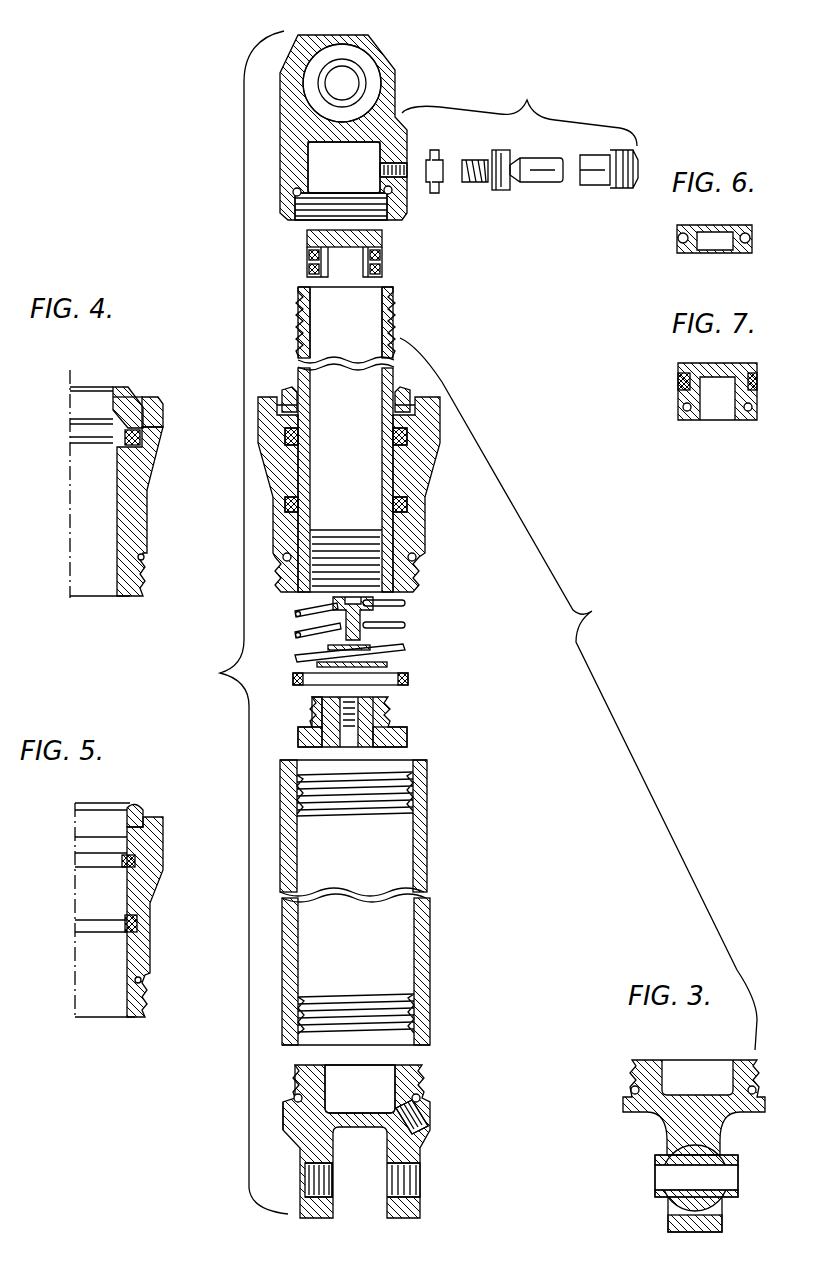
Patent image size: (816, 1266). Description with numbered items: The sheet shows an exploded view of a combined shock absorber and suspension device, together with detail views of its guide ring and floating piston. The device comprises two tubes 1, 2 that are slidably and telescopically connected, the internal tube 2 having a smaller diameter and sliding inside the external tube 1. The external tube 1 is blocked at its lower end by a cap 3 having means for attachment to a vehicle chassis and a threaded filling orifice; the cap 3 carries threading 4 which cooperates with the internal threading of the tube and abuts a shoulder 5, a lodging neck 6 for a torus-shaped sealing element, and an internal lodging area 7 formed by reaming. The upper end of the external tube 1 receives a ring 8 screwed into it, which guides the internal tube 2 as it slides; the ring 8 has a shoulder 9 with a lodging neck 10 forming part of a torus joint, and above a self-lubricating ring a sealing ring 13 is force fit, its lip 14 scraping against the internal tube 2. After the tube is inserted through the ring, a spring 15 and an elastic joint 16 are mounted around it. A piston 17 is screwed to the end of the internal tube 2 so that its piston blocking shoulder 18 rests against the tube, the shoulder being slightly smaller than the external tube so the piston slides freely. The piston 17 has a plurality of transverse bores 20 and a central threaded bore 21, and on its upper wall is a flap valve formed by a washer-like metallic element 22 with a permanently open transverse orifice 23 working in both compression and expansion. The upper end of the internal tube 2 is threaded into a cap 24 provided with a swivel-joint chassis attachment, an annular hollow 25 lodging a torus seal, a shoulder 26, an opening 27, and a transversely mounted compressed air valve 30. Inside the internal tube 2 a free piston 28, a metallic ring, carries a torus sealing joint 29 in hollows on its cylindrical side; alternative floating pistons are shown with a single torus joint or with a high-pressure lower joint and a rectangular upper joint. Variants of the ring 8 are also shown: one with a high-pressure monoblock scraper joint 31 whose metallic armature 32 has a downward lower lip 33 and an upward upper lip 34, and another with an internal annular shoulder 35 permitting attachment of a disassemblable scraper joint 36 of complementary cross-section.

In FIG. 3, the external tube 1 is at (427, 858).
In FIG. 3, the internal tube 2 is at (393, 345).
In FIG. 3, the cap 3 is at (361, 1130).
In FIG. 3, the threading 4 is at (296, 1072).
In FIG. 3, the shoulder 5 is at (294, 1097).
In FIG. 3, the lodging neck 6 is at (283, 1117).
In FIG. 3, the internal lodging area 7 is at (380, 1072).
In FIG. 3, the ring 8 is at (268, 456).
In FIG. 4, the ring 8 is at (128, 492).
In FIG. 3, the shoulder 9 is at (283, 570).
In FIG. 3, the lodging neck 10 is at (420, 558).
In FIG. 3, the sealing ring 13 is at (280, 396).
In FIG. 3, the lip 14 is at (292, 388).
In FIG. 3, the spring 15 is at (405, 625).
In FIG. 3, the elastic joint 16 is at (410, 679).
In FIG. 3, the piston 17 is at (357, 721).
In FIG. 3, the piston blocking shoulder 18 is at (312, 725).
In FIG. 3, the transverse bores 20 is at (395, 748).
In FIG. 3, the central threaded bore 21 is at (320, 747).
In FIG. 3, the metallic element 22 is at (395, 661).
In FIG. 3, the transverse orifice 23 is at (298, 622).
In FIG. 3, the cap 24 is at (298, 110).
In FIG. 3, the annular hollow 25 is at (290, 193).
In FIG. 3, the shoulder 26 is at (312, 193).
In FIG. 3, the opening 27 is at (320, 163).
In FIG. 3, the free piston 28 is at (315, 233).
In FIG. 3, the torus sealing joint 29 is at (310, 268).
In FIG. 3, the valve 30 is at (499, 190).
In FIG. 4, the monoblock scraper joint 31 is at (113, 408).
In FIG. 4, the metallic armature 32 is at (152, 397).
In FIG. 4, the lower lip 33 is at (115, 443).
In FIG. 4, the upper lip 34 is at (125, 387).
In FIG. 5, the internal annular shoulder 35 is at (150, 815).
In FIG. 5, the disassemblable scraper joint 36 is at (133, 806).